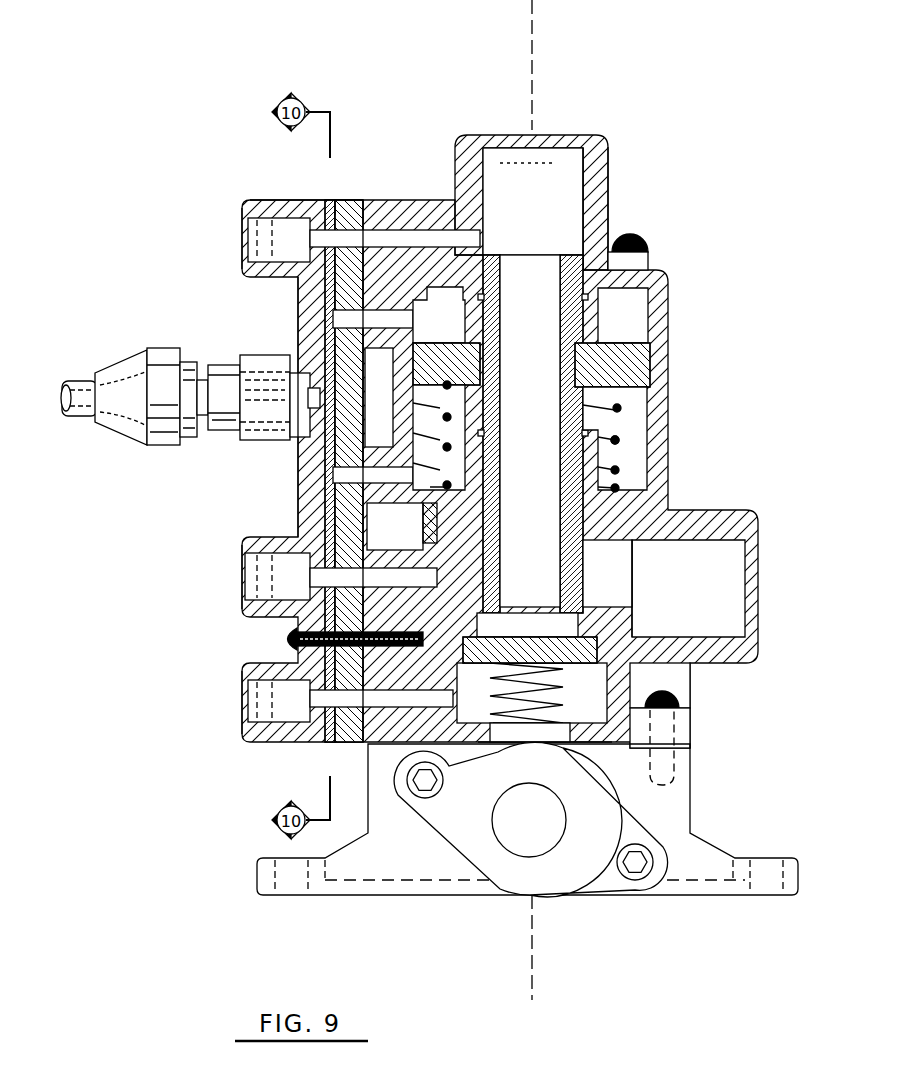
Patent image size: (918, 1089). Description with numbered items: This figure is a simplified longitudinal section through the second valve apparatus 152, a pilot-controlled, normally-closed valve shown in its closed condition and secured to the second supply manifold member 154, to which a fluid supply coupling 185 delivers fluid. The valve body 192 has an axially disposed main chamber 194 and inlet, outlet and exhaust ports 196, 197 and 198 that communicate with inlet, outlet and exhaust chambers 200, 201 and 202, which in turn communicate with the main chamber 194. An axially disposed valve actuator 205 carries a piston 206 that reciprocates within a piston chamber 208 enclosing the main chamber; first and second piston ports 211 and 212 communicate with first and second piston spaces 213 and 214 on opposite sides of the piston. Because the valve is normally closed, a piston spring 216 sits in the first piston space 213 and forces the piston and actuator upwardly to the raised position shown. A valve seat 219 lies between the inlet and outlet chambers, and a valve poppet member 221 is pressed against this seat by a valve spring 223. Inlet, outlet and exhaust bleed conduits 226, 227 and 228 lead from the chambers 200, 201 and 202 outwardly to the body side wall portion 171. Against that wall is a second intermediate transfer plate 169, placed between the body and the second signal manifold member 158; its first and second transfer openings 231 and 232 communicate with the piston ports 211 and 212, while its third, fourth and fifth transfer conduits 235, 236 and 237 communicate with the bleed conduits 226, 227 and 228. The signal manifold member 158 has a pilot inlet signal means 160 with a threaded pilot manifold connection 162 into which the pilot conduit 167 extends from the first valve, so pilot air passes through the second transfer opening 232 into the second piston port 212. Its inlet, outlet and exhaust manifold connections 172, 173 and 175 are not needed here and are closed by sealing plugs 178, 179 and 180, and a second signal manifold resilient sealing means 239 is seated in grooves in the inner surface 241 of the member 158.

The second valve apparatus 152 is at (658, 137).
The second supply manifold member 154 is at (410, 878).
The second signal manifold member 158 is at (252, 505).
The pilot inlet signal means 160 is at (190, 394).
The threaded pilot manifold connection 162 is at (232, 372).
The pilot conduit 167 is at (92, 395).
The second intermediate transfer plate 169 is at (347, 200).
The body side wall portion 171 is at (352, 228).
The inlet manifold connection 172 is at (270, 738).
The outlet manifold connection 173 is at (248, 614).
The exhaust manifold connection 175 is at (247, 213).
The sealing plug 178 is at (248, 700).
The sealing plug 179 is at (248, 598).
The sealing plug 180 is at (250, 238).
The fluid supply coupling 185 is at (540, 880).
The valve body 192 is at (612, 240).
The main chamber 194 is at (540, 285).
The inlet port 196 is at (520, 738).
The outlet port 197 is at (705, 650).
The exhaust port 198 is at (560, 165).
The inlet chamber 200 is at (615, 738).
The outlet chamber 201 is at (608, 577).
The exhaust chamber 202 is at (590, 205).
The valve actuator 205 is at (512, 283).
The piston 206 is at (640, 380).
The piston chamber 208 is at (632, 412).
The first piston port 211 is at (367, 505).
The second piston port 212 is at (393, 330).
The first piston space 213 is at (630, 460).
The second piston space 214 is at (630, 330).
The piston spring 216 is at (618, 436).
The valve seat 219 is at (570, 638).
The valve poppet member 221 is at (600, 695).
The valve spring 223 is at (530, 730).
The inlet bleed conduit 226 is at (510, 710).
The outlet bleed conduit 227 is at (418, 580).
The exhaust bleed conduit 228 is at (410, 240).
The first transfer opening 231 is at (348, 468).
The second transfer opening 232 is at (320, 318).
The third transfer conduit 235 is at (345, 698).
The fourth transfer conduit 236 is at (345, 578).
The fifth transfer conduit 237 is at (355, 240).
The second signal manifold resilient sealing means 239 is at (318, 520).
The inner surface 241 is at (338, 203).